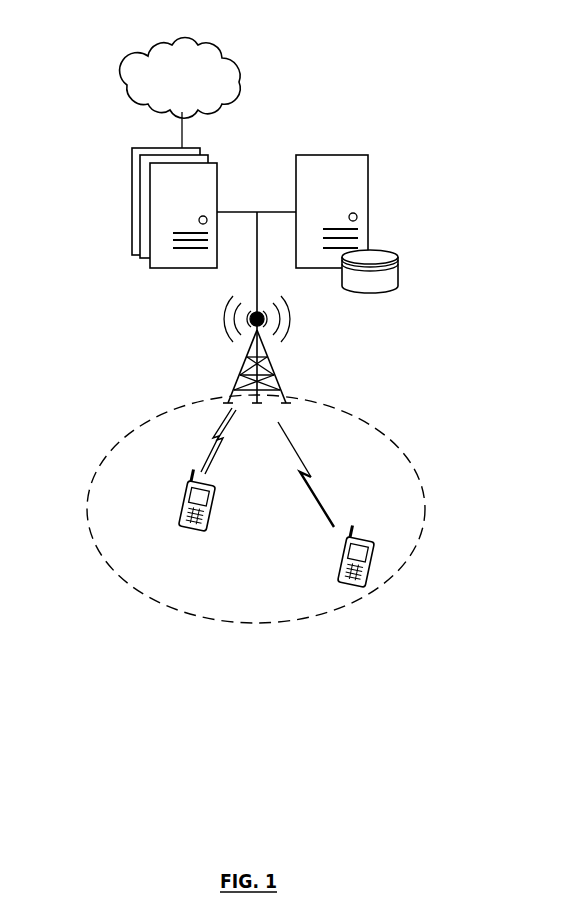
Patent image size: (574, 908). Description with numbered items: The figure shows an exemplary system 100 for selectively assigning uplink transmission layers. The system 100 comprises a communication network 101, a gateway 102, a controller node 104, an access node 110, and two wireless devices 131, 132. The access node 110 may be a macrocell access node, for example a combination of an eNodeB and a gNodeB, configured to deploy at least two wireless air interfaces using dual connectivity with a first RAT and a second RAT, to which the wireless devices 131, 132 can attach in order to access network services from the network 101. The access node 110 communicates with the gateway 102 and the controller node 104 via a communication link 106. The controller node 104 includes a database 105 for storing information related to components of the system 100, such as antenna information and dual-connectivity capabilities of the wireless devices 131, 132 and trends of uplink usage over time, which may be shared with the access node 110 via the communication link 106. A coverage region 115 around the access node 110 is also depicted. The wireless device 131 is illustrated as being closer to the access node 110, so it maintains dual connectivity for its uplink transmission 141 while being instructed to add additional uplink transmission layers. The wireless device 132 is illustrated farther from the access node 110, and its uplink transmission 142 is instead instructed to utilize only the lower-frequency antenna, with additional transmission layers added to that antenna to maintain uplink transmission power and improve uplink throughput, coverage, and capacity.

The system 100 is at (312, 53).
The communication network 101 is at (197, 87).
The gateway 102 is at (132, 182).
The controller node 104 is at (369, 198).
The database 105 is at (398, 268).
The communication link 106 is at (256, 262).
The access node 110 is at (233, 390).
The coverage area / cell 115 is at (103, 460).
The wireless device 131 is at (200, 530).
The wireless device 132 is at (343, 580).
The uplink transmission 141 is at (203, 441).
The wireless link to UE 132 142 is at (314, 458).